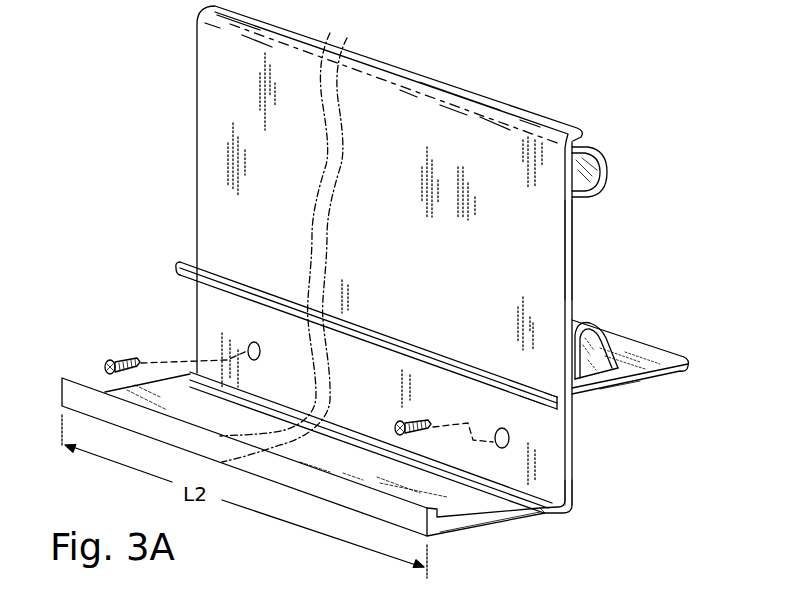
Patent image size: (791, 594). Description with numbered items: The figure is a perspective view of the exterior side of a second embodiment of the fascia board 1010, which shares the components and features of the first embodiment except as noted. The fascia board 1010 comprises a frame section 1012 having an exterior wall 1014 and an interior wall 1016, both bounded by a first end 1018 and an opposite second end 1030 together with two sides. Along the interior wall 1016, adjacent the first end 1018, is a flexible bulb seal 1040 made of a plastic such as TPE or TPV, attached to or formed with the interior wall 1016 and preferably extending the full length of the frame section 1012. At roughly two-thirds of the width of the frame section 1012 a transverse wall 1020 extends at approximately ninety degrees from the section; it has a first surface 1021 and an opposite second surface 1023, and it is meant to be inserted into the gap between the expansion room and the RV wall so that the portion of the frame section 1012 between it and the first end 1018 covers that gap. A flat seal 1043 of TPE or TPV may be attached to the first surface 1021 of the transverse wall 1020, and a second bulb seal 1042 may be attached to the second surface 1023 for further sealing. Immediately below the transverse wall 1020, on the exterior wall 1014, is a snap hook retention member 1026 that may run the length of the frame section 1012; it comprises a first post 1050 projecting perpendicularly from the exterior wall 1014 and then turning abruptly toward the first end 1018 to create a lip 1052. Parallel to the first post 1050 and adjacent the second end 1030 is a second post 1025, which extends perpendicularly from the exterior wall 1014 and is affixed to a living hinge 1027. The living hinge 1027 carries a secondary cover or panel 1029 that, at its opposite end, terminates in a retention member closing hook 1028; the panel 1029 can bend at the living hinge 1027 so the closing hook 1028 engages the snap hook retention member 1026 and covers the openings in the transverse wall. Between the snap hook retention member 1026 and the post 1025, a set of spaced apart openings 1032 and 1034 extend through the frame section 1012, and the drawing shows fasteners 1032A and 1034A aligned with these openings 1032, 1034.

The fascia board 1010 is at (127, 64).
The frame section 1012 is at (196, 143).
The exterior wall 1014 is at (212, 198).
The interior wall 1016 is at (580, 242).
The first end 1018 is at (518, 98).
The transverse wall 1020 is at (664, 352).
The first surface 1021 is at (667, 380).
The second surface 1023 is at (625, 338).
The second post 1025 is at (557, 503).
The snap hook retention member 1026 is at (533, 405).
The living hinge 1027 is at (547, 516).
The retention member closing hook 1028 is at (385, 508).
The secondary cover or panel 1029 is at (478, 527).
The second end 1030 is at (567, 520).
The opening 1032 is at (237, 347).
The screw 1032A is at (120, 357).
The opening 1034 is at (502, 424).
The screw 1034A is at (392, 426).
The flexible bulb seal 1040 is at (598, 148).
The second bulb seal 1042 is at (593, 327).
The flat seal 1043 is at (640, 378).
The first post 1050 is at (553, 404).
The lip 1052 is at (190, 258).